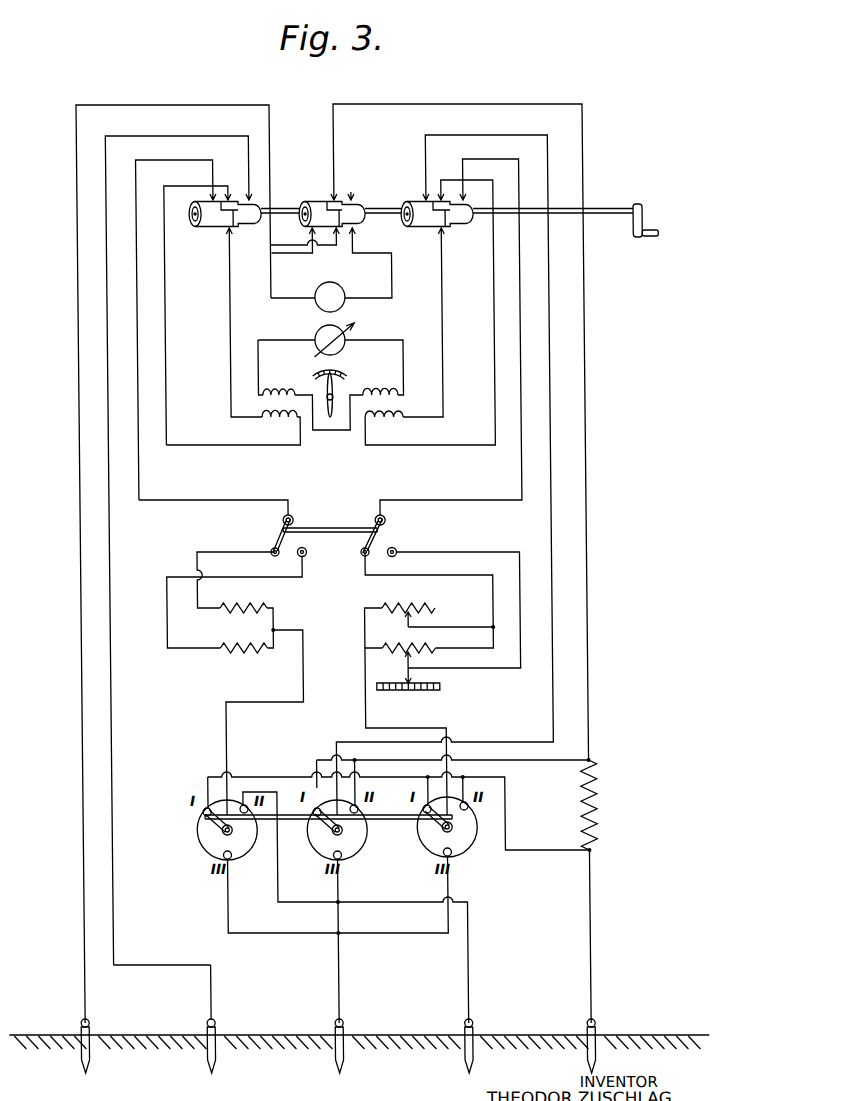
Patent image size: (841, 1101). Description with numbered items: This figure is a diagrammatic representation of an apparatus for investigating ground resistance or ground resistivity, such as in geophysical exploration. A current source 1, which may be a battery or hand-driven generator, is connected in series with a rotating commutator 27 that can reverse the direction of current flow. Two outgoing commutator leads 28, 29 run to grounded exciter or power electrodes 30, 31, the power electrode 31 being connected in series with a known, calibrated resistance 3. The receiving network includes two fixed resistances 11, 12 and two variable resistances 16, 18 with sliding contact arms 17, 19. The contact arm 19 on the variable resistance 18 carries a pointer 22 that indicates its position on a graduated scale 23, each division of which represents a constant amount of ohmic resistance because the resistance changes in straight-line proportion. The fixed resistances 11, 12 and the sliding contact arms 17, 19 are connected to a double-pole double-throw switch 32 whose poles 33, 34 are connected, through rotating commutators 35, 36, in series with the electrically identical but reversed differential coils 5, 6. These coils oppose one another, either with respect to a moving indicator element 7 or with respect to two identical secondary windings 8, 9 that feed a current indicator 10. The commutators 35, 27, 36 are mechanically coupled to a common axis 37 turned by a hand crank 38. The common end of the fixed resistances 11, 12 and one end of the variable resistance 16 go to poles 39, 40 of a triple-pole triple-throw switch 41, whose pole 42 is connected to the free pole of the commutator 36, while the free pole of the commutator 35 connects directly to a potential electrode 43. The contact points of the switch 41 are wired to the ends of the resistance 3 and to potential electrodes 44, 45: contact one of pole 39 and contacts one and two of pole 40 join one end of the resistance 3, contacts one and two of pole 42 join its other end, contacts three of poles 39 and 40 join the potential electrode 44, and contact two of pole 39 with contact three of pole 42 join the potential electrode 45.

The current source 1 is at (313, 303).
The calibrated resistance 3 is at (590, 812).
The differential coil 5 is at (263, 428).
The differential coil 6 is at (380, 428).
The moving indicator element 7 is at (338, 380).
The secondary winding 8 is at (284, 383).
The secondary winding 9 is at (383, 393).
The current indicator 10 is at (313, 334).
The fixed resistance 11 is at (243, 597).
The fixed resistance 12 is at (258, 660).
The variable resistance 16 is at (407, 607).
The sliding contact arm 17 is at (401, 626).
The variable resistance 18 is at (425, 651).
The moving contact arm 19 is at (399, 664).
The pointer 22 is at (399, 680).
The graduated scale 23 is at (410, 691).
The rotating commutator 27 is at (353, 201).
The commutator lead 28 is at (229, 104).
The commutator lead 29 is at (402, 104).
The power electrode 30 is at (72, 1021).
The power electrode 31 is at (586, 1021).
The double-pole double-throw switch 32 is at (322, 528).
The pole 33 is at (271, 546).
The pole 34 is at (377, 541).
The rotating commutator 35 is at (206, 229).
The rotating commutator 36 is at (421, 229).
The common axis 37 is at (604, 207).
The hand crank 38 is at (645, 218).
The pole 39 is at (200, 826).
The pole 40 is at (420, 842).
The triple-pole triple-throw switch 41 is at (385, 816).
The pole 42 is at (320, 836).
The potential electrode 43 is at (198, 1021).
The potential electrode 44 is at (326, 1021).
The potential electrode 45 is at (456, 1021).